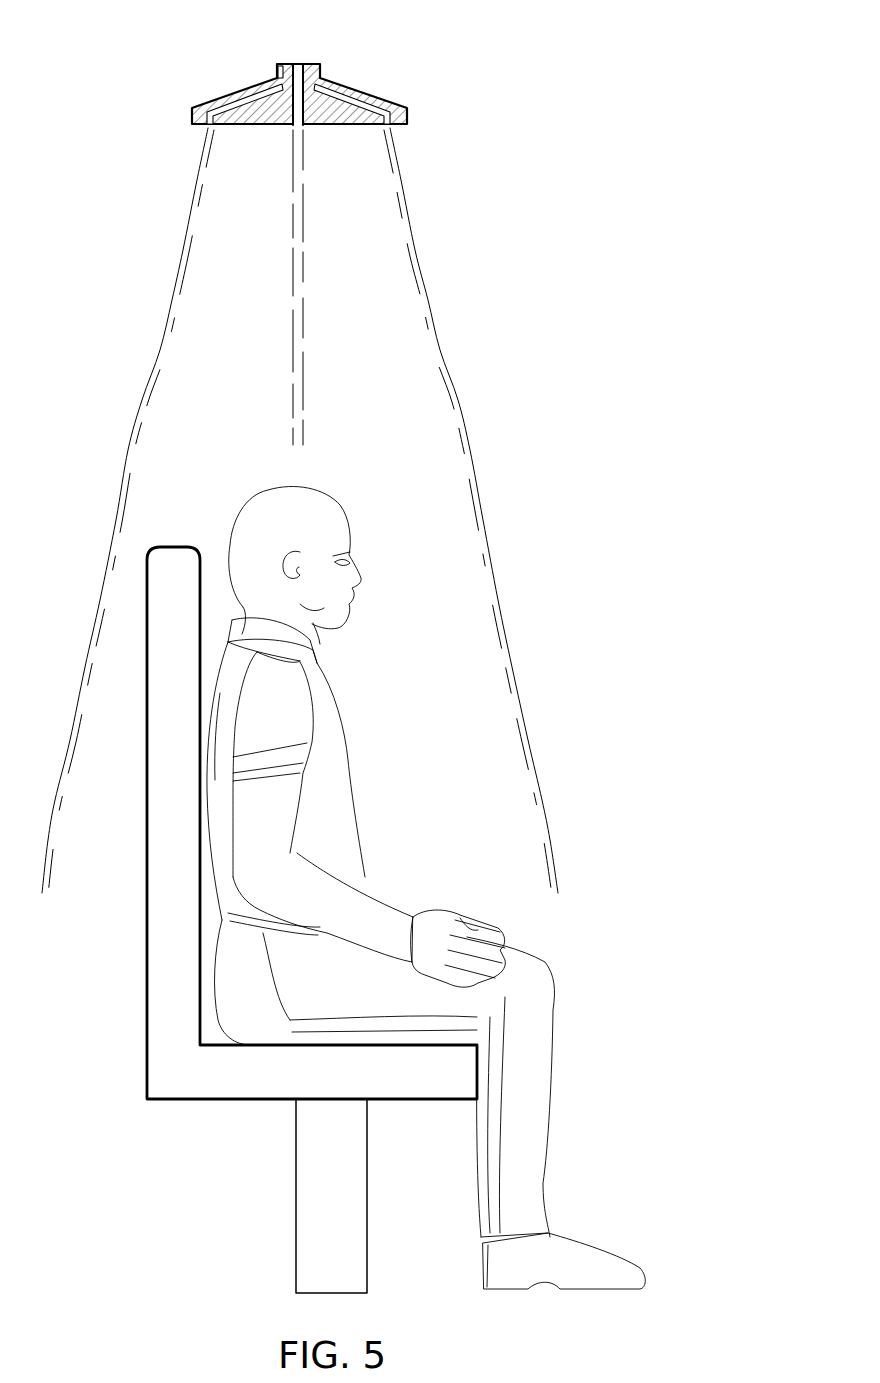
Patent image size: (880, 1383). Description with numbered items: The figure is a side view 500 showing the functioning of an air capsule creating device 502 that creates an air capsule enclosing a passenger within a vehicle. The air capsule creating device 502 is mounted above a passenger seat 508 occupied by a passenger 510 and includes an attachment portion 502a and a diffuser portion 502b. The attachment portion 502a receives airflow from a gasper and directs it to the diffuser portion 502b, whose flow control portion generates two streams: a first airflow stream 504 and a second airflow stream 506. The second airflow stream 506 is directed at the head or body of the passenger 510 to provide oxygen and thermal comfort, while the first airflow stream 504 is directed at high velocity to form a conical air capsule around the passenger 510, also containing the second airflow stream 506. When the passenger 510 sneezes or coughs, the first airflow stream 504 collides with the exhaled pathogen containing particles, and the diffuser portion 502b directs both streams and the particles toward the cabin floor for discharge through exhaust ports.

The side view 500 is at (470, 42).
The air capsule creating device 502 is at (210, 70).
The attachment portion 502a is at (297, 62).
The diffuser portion 502b is at (190, 113).
The first airflow stream 504 is at (145, 317).
The second airflow stream 506 is at (278, 290).
The passenger seat 508 is at (160, 990).
The passenger 510 is at (232, 527).